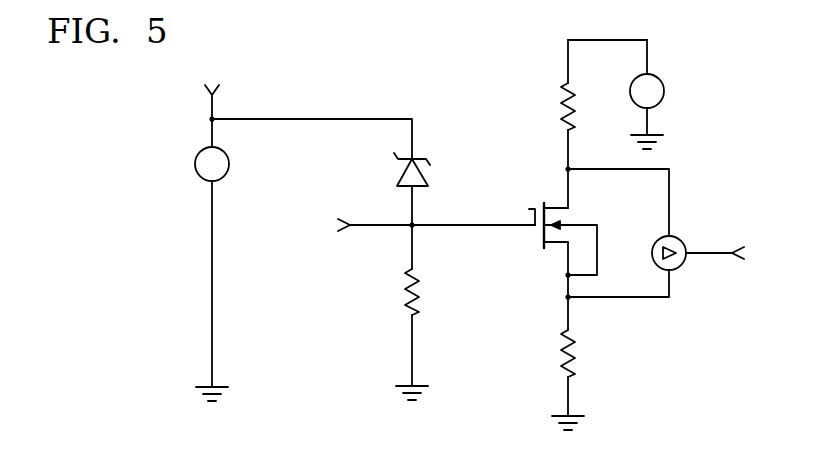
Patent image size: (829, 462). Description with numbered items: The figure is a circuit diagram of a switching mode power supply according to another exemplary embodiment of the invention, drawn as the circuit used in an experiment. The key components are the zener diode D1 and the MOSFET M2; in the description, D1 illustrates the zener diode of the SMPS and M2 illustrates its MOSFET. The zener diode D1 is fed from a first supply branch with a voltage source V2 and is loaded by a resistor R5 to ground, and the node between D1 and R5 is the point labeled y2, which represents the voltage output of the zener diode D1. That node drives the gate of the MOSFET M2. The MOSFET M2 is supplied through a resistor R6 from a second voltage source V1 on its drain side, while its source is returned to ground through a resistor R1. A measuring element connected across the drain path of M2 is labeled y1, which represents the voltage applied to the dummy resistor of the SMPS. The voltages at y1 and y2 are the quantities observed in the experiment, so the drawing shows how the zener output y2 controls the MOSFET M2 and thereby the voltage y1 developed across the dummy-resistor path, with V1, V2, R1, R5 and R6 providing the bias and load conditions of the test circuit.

The voltage source V2 is at (229, 243).
The zener diode D1 is at (425, 184).
The resistor R5 is at (422, 312).
The resistor R6 is at (584, 124).
The voltage source V1 is at (661, 94).
The MOSFET M2 is at (565, 248).
The resistor R1 is at (579, 380).
The voltage applied to dummy resistor y1 is at (669, 233).
The voltage output of zener diode y2 is at (421, 225).